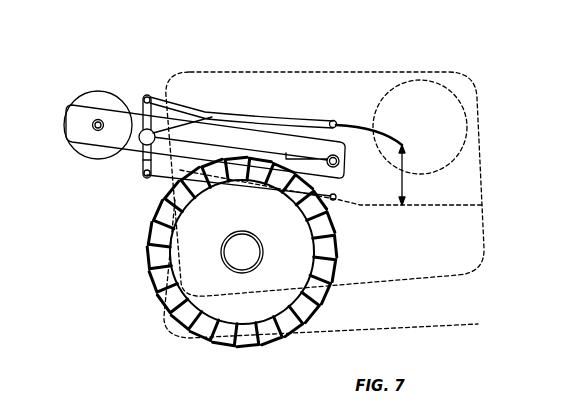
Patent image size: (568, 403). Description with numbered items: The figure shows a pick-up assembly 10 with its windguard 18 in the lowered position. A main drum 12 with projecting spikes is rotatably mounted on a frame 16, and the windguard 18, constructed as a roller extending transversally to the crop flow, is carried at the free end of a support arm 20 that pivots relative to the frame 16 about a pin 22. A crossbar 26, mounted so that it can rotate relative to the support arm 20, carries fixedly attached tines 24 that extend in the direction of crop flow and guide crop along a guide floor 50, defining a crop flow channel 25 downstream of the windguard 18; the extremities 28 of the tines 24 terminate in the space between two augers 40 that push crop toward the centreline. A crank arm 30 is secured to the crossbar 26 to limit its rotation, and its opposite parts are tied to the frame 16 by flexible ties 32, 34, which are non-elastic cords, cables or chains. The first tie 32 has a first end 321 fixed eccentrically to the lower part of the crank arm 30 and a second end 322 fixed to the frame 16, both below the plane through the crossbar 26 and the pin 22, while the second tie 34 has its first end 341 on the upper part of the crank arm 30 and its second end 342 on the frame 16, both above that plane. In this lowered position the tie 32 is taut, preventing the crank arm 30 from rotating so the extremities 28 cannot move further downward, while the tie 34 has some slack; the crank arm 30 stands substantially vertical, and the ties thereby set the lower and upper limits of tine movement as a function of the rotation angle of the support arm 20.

The pick-up assembly 10 is at (466, 44).
The main drum 12 is at (202, 303).
The frame 16 is at (482, 237).
The windguard 18 is at (77, 94).
The support arm 20 is at (232, 134).
The pin 22 is at (340, 166).
The tines 24 is at (305, 112).
The crop flow channel 25 is at (360, 140).
The crossbar 26 is at (142, 130).
The extremities of the tines 28 is at (406, 138).
The crank arm 30 is at (142, 163).
The flexible tie 32 is at (148, 186).
The flexible tie 34 is at (152, 94).
The auger 40 is at (463, 128).
The guide floor 50 is at (455, 325).
The first end of flexible tie 32 321 is at (145, 177).
The second end of flexible tie 32 322 is at (336, 200).
The first end of flexible tie 34 341 is at (147, 96).
The second end of flexible tie 34 342 is at (334, 120).